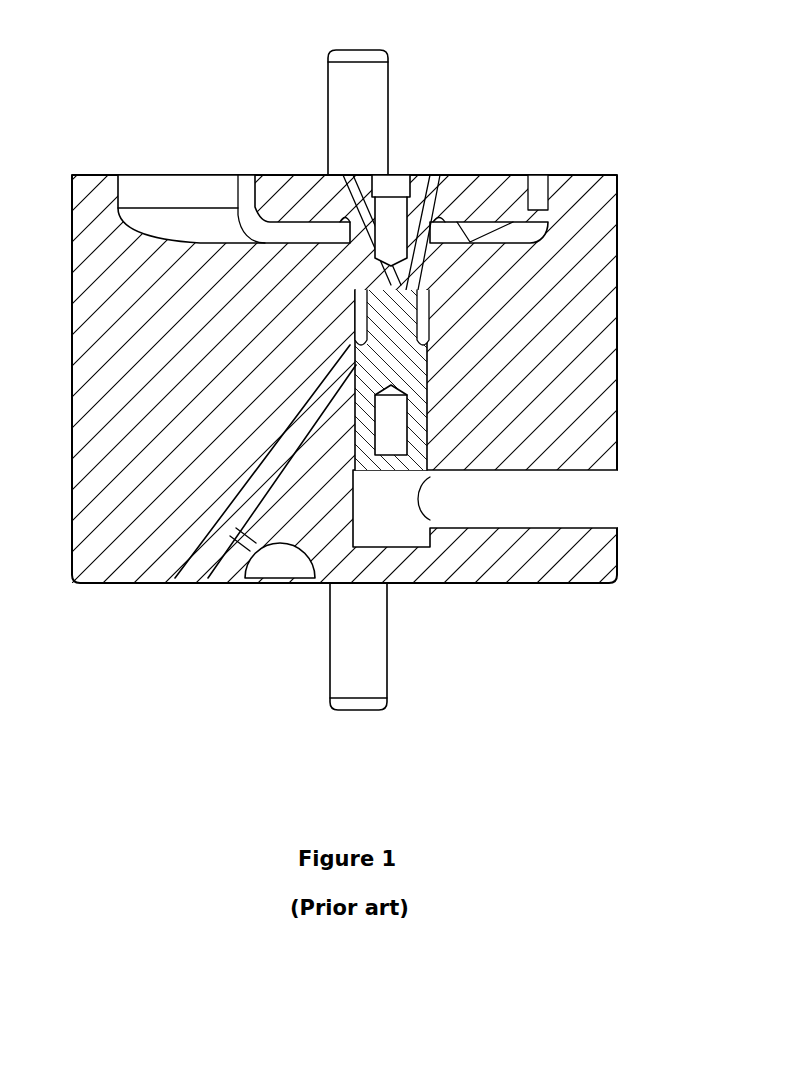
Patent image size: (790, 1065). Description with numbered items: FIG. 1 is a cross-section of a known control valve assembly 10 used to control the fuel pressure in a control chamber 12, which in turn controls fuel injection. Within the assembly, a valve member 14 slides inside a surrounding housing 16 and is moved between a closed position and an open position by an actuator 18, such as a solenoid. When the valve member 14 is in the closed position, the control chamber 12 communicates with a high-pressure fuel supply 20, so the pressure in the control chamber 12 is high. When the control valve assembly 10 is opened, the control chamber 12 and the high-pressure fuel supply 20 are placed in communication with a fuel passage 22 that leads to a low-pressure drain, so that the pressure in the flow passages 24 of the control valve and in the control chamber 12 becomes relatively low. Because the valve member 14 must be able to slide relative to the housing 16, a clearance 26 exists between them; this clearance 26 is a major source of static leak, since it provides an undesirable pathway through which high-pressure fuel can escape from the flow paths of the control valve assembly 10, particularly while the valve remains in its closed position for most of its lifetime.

The control valve assembly 10 is at (90, 106).
The control chamber 12 is at (280, 562).
The valve member 14 is at (412, 365).
The housing 16 is at (470, 297).
The actuator 18 is at (480, 188).
The high-pressure fuel supply 20 is at (193, 567).
The fuel passage 22 is at (303, 232).
The flow passages 24 is at (422, 315).
The clearance 26 is at (428, 427).